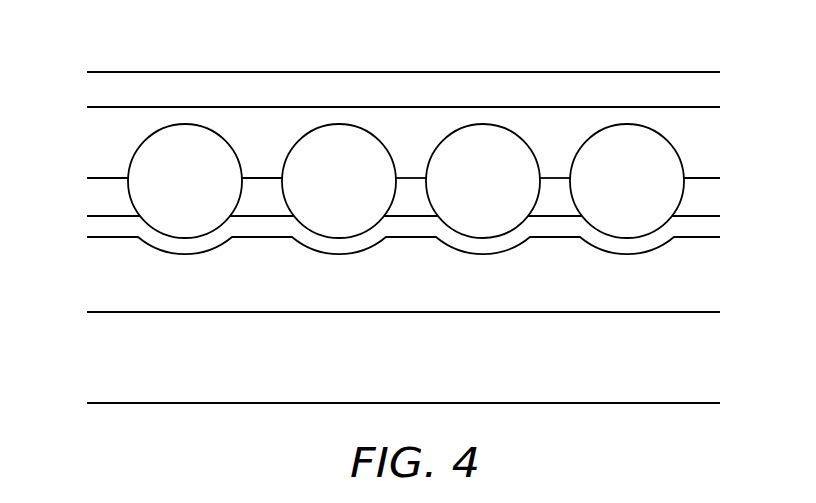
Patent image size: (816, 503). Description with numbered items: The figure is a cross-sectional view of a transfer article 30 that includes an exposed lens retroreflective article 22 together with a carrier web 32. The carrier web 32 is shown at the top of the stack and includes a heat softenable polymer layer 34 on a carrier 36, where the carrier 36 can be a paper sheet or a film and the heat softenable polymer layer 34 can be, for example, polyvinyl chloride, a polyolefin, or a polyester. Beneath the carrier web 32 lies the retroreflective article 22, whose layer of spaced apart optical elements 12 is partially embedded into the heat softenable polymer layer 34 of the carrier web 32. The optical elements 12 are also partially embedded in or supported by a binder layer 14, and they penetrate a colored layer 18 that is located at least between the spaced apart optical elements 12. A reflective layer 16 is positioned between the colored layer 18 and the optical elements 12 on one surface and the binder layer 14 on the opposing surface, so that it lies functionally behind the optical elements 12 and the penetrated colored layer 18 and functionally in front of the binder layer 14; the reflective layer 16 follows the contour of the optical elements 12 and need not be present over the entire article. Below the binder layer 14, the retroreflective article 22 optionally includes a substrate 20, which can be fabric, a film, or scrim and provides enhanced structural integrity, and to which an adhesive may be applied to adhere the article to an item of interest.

The transfer article 30 is at (154, 43).
The carrier web 32 is at (73, 72).
The carrier 36 is at (420, 100).
The heat softenable polymer layer 34 is at (424, 141).
The optical elements 12 is at (631, 142).
The colored layer 18 is at (273, 208).
The reflective layer 16 is at (177, 243).
The binder layer 14 is at (427, 293).
The substrate 20 is at (428, 372).
The retroreflective article 22 is at (735, 403).